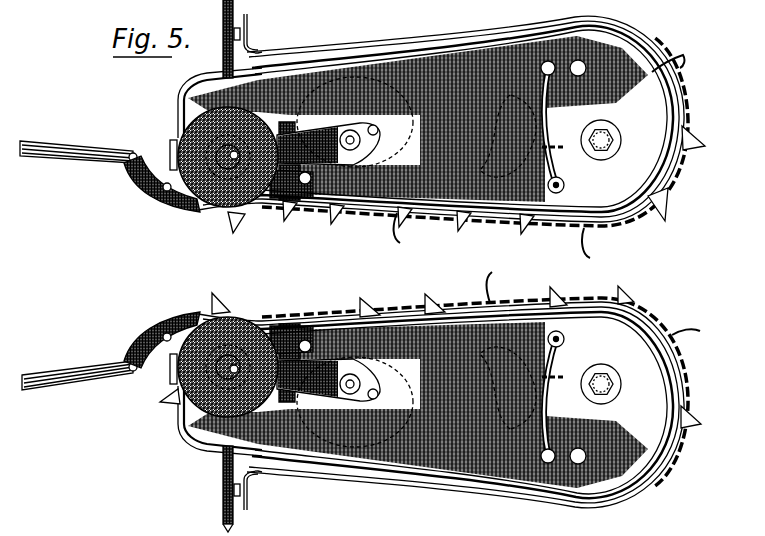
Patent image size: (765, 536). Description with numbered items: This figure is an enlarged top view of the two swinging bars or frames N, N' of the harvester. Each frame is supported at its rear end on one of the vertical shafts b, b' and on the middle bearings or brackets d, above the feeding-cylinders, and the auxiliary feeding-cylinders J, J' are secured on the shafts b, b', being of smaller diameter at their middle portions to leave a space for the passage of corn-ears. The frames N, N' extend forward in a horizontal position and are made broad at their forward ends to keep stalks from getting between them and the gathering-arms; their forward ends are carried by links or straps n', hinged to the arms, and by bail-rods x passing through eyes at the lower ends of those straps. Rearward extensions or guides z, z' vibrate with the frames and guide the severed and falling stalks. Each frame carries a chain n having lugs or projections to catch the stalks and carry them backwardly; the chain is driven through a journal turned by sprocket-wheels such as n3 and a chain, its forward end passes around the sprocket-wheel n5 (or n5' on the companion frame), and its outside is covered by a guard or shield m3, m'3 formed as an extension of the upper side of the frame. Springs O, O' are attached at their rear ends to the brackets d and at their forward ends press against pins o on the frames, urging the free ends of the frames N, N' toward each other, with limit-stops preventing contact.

The bracket d is at (214, 490).
The spring O' is at (441, 113).
The spring O is at (441, 409).
The guard or shield m3 is at (528, 24).
The guard or shield m'3 is at (440, 422).
The auxiliary feeding-cylinder J' is at (227, 179).
The auxiliary feeding-cylinder J is at (228, 348).
The rearward extension or guide z' is at (78, 160).
The rearward extension or guide z is at (79, 371).
The vertical shaft b' is at (153, 140).
The vertical shaft b is at (153, 379).
The bail-rod x is at (558, 262).
The pin o is at (584, 76).
The swinging bar or frame N' is at (601, 156).
The swinging bar or frame N is at (601, 404).
The link or strap n' is at (544, 263).
The chain n is at (436, 262).
The sprocket-wheel n3 is at (388, 160).
The sprocket-wheel n5 is at (504, 142).
The sprocket-wheel n5' is at (416, 397).